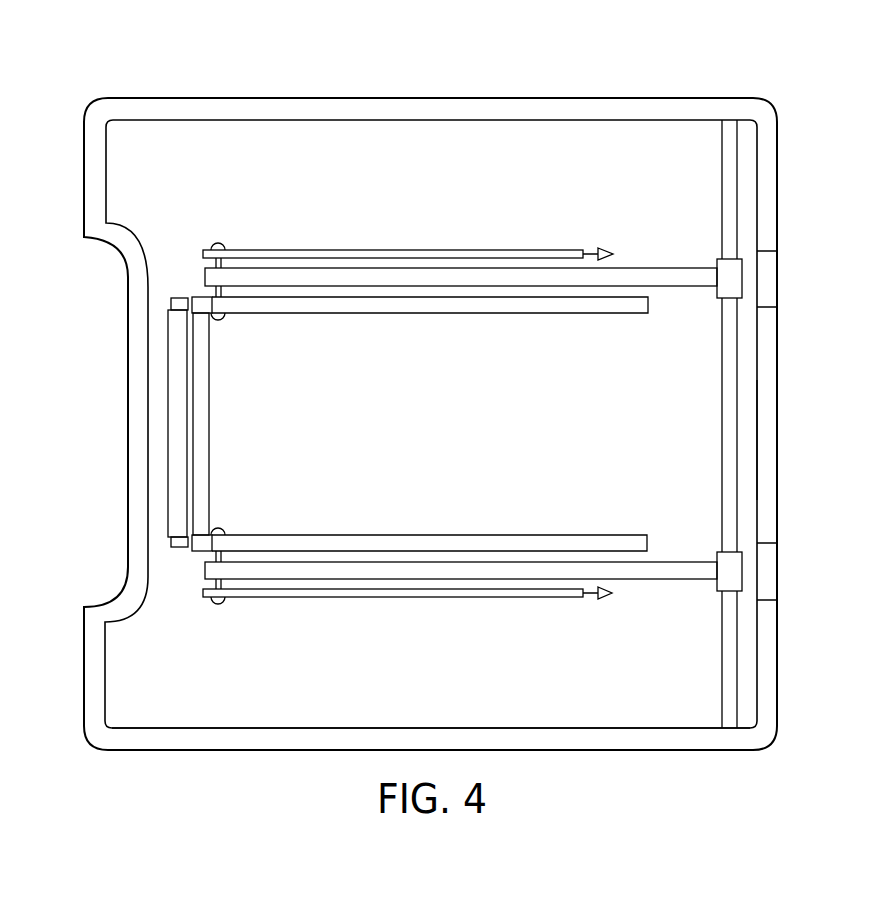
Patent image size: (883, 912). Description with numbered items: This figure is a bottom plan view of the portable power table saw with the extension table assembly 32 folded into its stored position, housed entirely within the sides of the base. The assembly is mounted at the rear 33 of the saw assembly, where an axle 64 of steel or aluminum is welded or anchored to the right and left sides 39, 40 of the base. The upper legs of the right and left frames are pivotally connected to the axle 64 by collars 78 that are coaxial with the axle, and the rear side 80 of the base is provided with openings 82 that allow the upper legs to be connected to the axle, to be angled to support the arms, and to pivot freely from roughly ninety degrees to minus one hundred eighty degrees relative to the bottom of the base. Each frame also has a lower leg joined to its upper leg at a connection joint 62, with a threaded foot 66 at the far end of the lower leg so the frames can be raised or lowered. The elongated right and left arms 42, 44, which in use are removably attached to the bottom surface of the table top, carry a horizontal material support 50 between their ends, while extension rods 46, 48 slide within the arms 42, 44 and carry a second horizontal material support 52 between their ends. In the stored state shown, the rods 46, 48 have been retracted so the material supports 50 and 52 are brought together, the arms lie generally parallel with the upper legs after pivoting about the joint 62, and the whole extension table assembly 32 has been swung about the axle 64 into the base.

The extension table assembly 32 is at (342, 249).
The rear 33 is at (808, 352).
The right side 39 is at (570, 740).
The left side 40 is at (449, 108).
The right arm 42 is at (413, 315).
The left arm 44 is at (449, 541).
The extension rod 46 is at (180, 302).
The extension rod 48 is at (179, 548).
The horizontal material support 50 is at (200, 393).
The horizontal material support 52 is at (177, 443).
The connection joint 62 is at (219, 606).
The axle 64 is at (730, 408).
The foot 66 is at (617, 250).
The collar 78 is at (728, 281).
The rear side 80 is at (777, 440).
The openings 82 is at (767, 271).